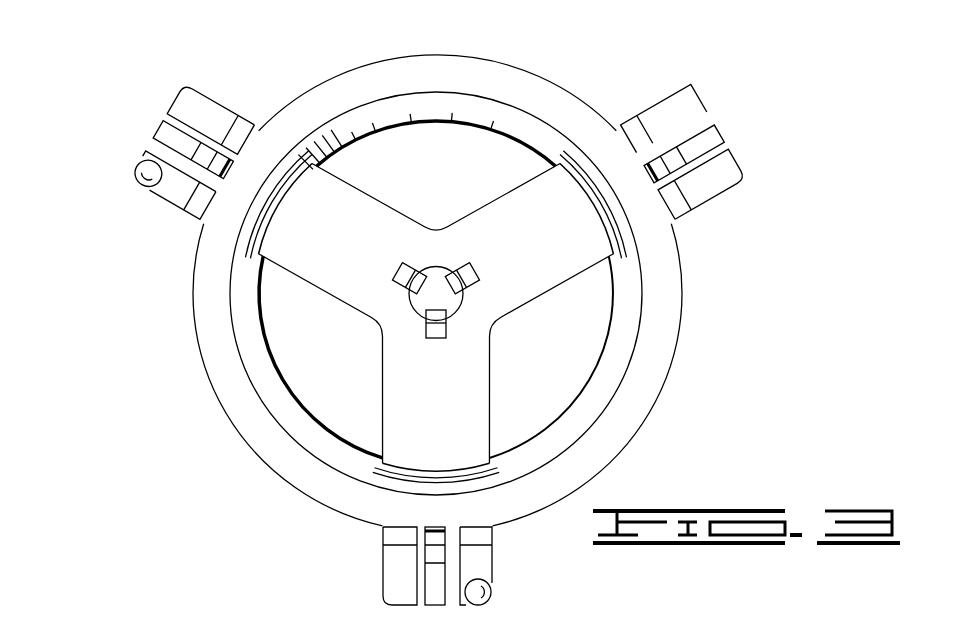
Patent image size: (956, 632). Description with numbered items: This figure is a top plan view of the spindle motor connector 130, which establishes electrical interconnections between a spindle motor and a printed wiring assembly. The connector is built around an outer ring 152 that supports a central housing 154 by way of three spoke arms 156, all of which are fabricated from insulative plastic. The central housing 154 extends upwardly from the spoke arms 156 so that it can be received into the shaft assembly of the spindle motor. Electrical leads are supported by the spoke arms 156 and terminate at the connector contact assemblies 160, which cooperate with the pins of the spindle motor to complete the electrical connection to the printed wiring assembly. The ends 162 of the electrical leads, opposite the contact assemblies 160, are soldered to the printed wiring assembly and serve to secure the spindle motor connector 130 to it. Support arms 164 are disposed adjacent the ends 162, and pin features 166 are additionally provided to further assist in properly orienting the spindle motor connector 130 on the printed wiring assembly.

The spindle motor connector 130 is at (325, 50).
The outer ring 152 is at (530, 86).
The central housing 154 is at (430, 268).
The spoke arms 156 is at (352, 290).
The connector contact assemblies 160 is at (402, 273).
The ends of the electrical leads 162 is at (173, 142).
The support arms 164 is at (195, 110).
The pin features 166 is at (147, 177).